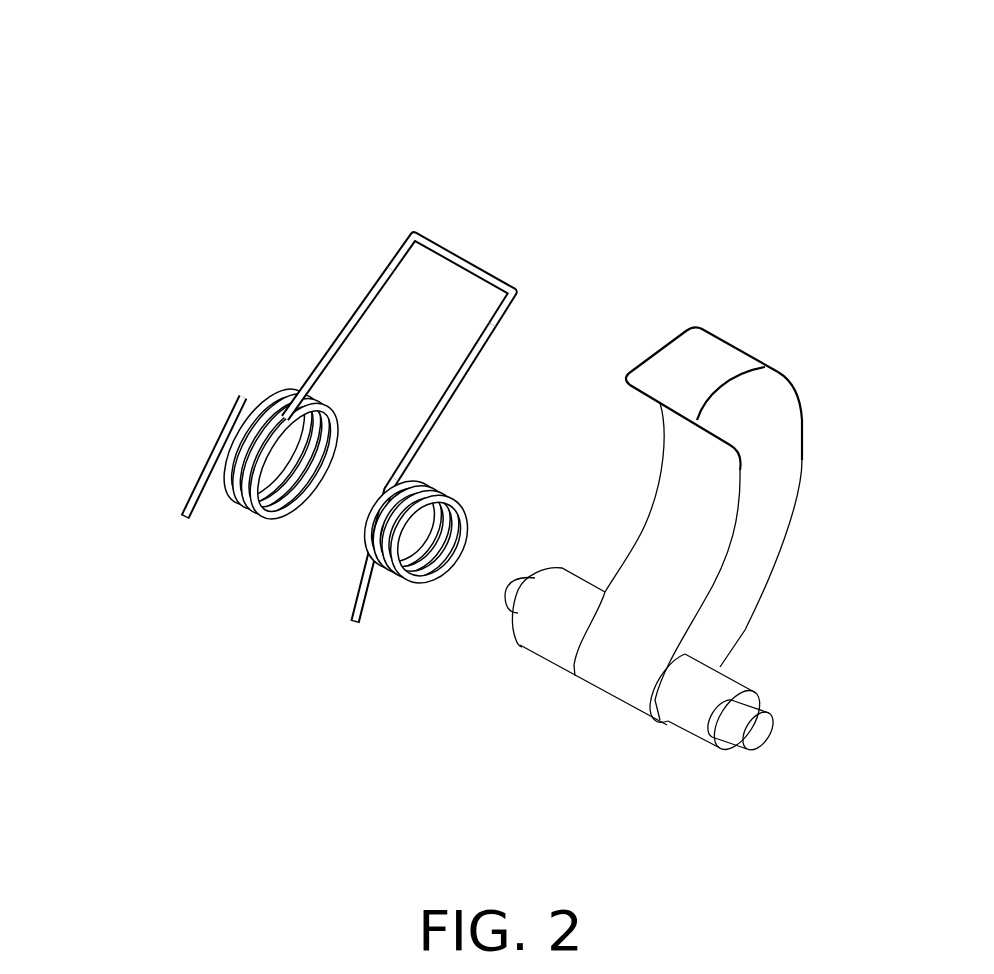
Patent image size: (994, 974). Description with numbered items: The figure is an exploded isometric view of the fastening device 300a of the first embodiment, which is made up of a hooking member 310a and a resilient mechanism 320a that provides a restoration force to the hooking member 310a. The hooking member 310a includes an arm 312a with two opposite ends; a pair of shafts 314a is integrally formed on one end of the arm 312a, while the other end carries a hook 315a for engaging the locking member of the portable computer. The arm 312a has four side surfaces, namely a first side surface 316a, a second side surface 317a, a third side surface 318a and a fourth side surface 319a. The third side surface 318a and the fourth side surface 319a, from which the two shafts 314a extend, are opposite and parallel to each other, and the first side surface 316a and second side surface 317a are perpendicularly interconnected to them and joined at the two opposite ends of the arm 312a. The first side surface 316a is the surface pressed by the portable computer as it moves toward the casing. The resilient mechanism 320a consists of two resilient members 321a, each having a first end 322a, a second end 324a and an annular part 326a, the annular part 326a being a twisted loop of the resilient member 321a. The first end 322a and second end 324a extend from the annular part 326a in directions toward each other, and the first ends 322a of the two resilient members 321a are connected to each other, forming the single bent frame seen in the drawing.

The fastening device 300a is at (566, 42).
The hooking member 310a is at (577, 770).
The arm 312a is at (638, 665).
The shafts 314a is at (713, 685).
The hook 315a is at (747, 350).
The first side surface 316a is at (685, 350).
The second side surface 317a is at (703, 465).
The third side surface 318a is at (770, 498).
The fourth side surface 319a is at (650, 510).
The resilient mechanism 320a is at (293, 363).
The resilient member 321a is at (348, 322).
The first end 322a is at (413, 232).
The second end 324a is at (190, 500).
The annular part 326a is at (387, 532).